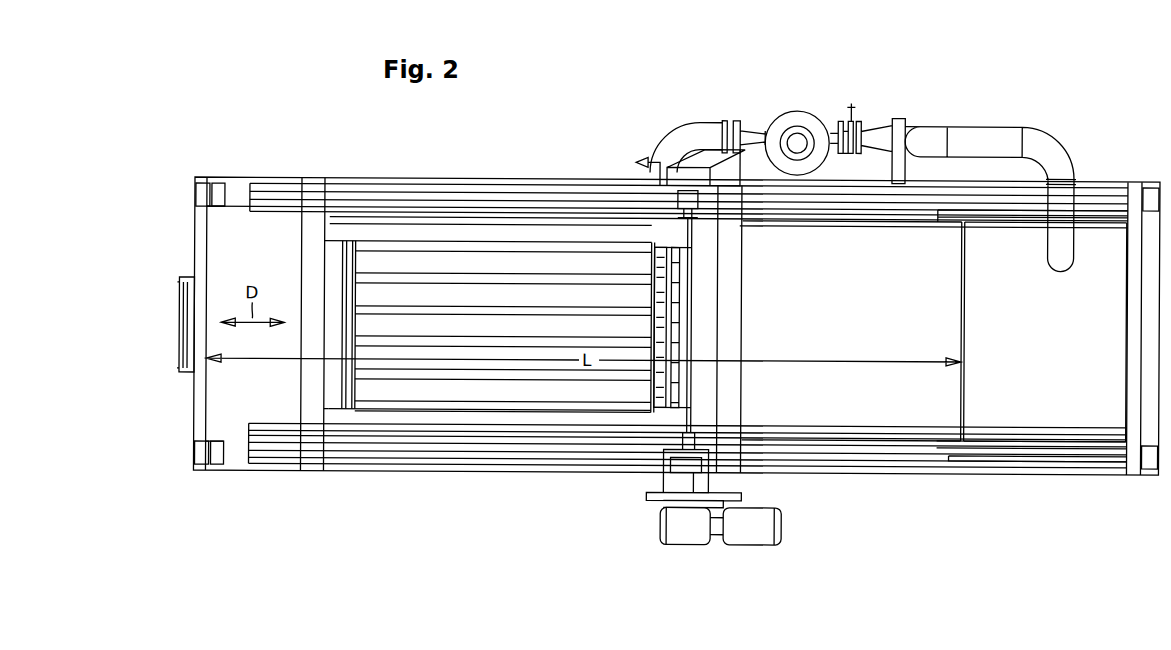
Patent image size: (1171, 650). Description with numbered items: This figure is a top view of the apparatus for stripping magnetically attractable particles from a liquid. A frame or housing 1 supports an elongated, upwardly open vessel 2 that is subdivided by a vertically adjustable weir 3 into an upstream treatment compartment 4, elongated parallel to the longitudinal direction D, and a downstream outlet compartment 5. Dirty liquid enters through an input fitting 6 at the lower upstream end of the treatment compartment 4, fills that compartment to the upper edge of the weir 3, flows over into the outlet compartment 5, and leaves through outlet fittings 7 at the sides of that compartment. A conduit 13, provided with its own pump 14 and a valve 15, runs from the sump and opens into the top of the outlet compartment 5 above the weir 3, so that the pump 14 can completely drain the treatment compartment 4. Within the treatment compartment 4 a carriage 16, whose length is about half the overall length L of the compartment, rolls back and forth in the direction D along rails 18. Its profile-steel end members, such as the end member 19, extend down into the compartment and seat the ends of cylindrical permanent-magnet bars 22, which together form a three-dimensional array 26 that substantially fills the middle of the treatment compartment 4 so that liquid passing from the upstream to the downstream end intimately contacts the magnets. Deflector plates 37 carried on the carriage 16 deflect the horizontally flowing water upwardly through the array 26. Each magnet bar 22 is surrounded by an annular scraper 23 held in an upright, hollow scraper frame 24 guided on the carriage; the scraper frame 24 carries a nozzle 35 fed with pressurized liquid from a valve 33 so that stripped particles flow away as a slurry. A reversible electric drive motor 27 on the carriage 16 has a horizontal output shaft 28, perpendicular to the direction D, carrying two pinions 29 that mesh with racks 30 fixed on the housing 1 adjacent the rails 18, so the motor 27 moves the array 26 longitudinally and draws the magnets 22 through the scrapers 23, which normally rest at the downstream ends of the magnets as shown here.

The frame or housing 1 is at (214, 470).
The vessel 2 is at (238, 450).
The weir 3 is at (957, 398).
The treatment compartment 4 is at (927, 257).
The outlet compartment 5 is at (1002, 257).
The dirty-liquid input fitting 6 is at (186, 277).
The outlet fittings 7 is at (986, 452).
The conduit 13 is at (674, 136).
The pump 14 is at (797, 110).
The valve 15 is at (870, 113).
The carriage 16 is at (351, 232).
The rails 18 is at (372, 455).
The end member 19 is at (349, 420).
The permanent-magnet bars 22 is at (521, 370).
The annular scraper 23 is at (660, 275).
The scraper frame 24 is at (674, 310).
The magnet array 26 is at (538, 303).
The reversible electric drive motor 27 is at (730, 545).
The output shaft 28 is at (672, 432).
The pinions 29 is at (692, 215).
The racks 30 is at (467, 222).
The valve 33 is at (636, 160).
The nozzle 35 is at (682, 370).
The deflector plates 37 is at (332, 265).